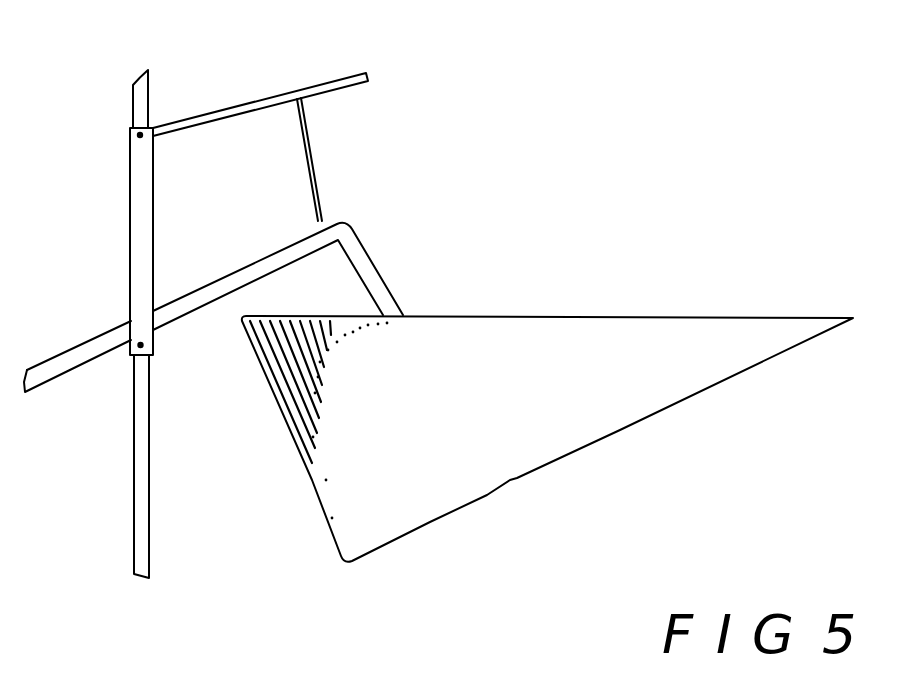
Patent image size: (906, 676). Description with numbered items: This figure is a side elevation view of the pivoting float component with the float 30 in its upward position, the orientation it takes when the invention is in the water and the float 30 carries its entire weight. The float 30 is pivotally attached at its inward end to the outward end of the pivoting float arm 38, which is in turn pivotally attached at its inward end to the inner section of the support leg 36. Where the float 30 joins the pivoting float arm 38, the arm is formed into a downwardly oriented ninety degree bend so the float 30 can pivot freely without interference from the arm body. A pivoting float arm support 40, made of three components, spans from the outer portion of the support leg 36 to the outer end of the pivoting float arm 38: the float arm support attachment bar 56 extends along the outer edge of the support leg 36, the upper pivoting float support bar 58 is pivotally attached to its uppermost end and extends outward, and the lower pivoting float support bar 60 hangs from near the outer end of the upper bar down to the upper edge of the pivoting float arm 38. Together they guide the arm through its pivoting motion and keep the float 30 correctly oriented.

The float 30 is at (584, 313).
The support leg 36 is at (128, 457).
The pivoting float arm 38 is at (88, 340).
The pivoting float arm support 40 is at (385, 129).
The float arm support attachment bar 56 is at (127, 211).
The upper pivoting float support bar 58 is at (238, 104).
The lower pivoting float support bar 60 is at (321, 187).